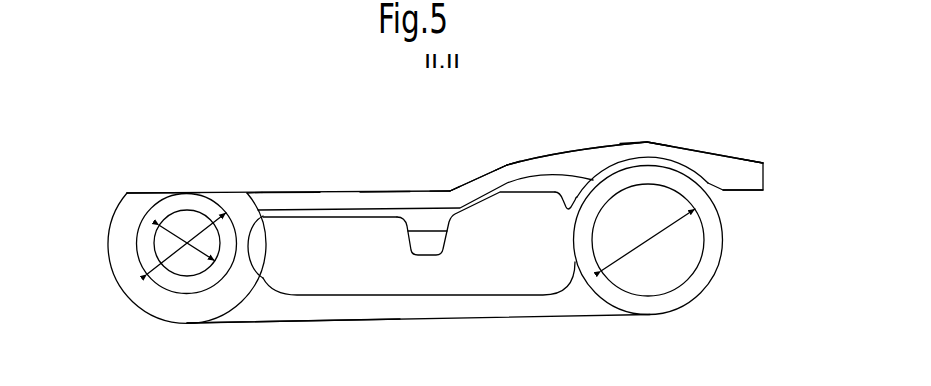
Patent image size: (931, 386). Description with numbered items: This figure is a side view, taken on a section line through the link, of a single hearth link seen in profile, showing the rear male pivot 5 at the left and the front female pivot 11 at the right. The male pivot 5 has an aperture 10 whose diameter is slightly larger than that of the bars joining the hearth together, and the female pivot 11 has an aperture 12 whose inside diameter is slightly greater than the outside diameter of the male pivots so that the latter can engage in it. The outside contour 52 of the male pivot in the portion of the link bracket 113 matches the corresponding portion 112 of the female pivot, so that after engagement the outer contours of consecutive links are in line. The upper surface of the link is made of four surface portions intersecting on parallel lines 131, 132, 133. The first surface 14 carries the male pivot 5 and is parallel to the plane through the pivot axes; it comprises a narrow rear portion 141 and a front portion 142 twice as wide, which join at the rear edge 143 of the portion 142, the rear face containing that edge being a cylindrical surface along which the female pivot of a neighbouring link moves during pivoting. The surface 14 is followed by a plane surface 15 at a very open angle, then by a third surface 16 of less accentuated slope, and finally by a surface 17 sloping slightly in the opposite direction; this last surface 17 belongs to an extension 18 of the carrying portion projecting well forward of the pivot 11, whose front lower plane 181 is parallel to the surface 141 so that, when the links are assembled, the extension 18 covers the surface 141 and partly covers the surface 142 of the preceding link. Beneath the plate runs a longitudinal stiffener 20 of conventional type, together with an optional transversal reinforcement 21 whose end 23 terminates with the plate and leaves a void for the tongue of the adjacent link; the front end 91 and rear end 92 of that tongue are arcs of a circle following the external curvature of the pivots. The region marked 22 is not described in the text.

The rear male pivot 5 is at (168, 312).
The aperture of the male pivot 10 is at (180, 263).
The front female pivot 11 is at (715, 230).
The aperture of the female pivot 12 is at (667, 272).
The first plane surface 14 is at (338, 190).
The rear portion of the first surface 141 is at (155, 190).
The front portion of the first surface 142 is at (292, 190).
The rear edge of the front portion 143 is at (253, 192).
The second plane surface 15 is at (483, 172).
The third plane surface 16 is at (560, 153).
The fourth plane surface 17 is at (691, 148).
The extension 18 is at (753, 173).
The front lower plane of the extension 181 is at (747, 192).
The longitudinal stiffener 20 is at (582, 302).
The transversal reinforcement 21 is at (437, 240).
The beam top surface 22 is at (386, 190).
The end of the transversal reinforcement 23 is at (418, 250).
The outside contour of the male pivot 52 is at (182, 324).
The front end of the tongue 91 is at (573, 193).
The rear end of the tongue 92 is at (251, 265).
The corresponding portion of the female pivot 112 is at (720, 272).
The link bracket 113 is at (108, 265).
The intersection line 131 is at (450, 188).
The intersection line 132 is at (507, 163).
The intersection line 133 is at (647, 142).